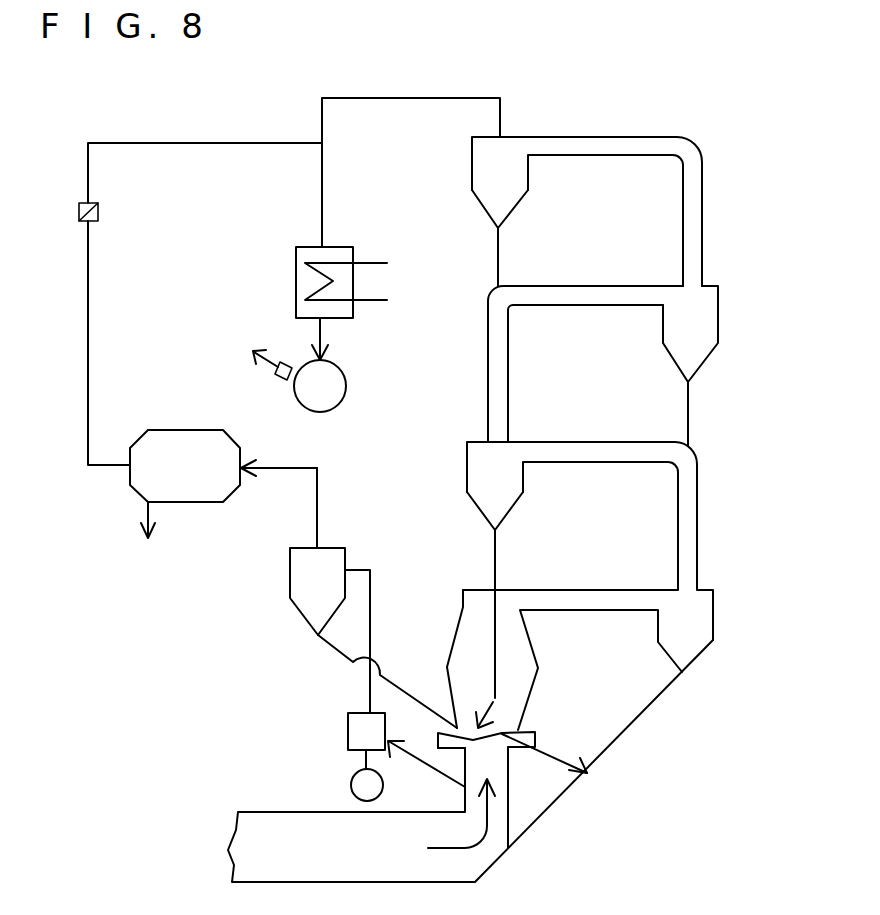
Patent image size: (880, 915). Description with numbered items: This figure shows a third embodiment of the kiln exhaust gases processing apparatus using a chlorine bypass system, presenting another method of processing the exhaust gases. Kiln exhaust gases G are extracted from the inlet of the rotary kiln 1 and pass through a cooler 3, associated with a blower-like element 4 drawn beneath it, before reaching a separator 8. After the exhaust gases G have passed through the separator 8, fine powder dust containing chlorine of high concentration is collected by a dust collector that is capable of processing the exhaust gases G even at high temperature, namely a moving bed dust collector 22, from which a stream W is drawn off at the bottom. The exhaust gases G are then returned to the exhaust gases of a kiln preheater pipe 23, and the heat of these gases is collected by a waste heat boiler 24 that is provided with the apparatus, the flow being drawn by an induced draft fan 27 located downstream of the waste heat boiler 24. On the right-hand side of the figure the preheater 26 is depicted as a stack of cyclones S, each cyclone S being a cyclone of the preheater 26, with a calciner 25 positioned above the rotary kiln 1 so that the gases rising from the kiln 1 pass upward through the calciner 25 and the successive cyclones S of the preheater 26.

The rotary kiln 1 is at (238, 835).
The cooler 3 is at (348, 733).
The blower 4 is at (351, 786).
The separator 8 is at (290, 592).
The moving bed dust collector 22 is at (207, 503).
The kiln preheater pipe 23 is at (425, 97).
The waste heat boiler 24 is at (296, 284).
The calciner 25 is at (456, 622).
The preheater 26 is at (733, 320).
The induced draft fan 27 is at (288, 362).
The cyclone S is at (528, 175).
The kiln exhaust gases G is at (490, 813).
The water W is at (147, 510).